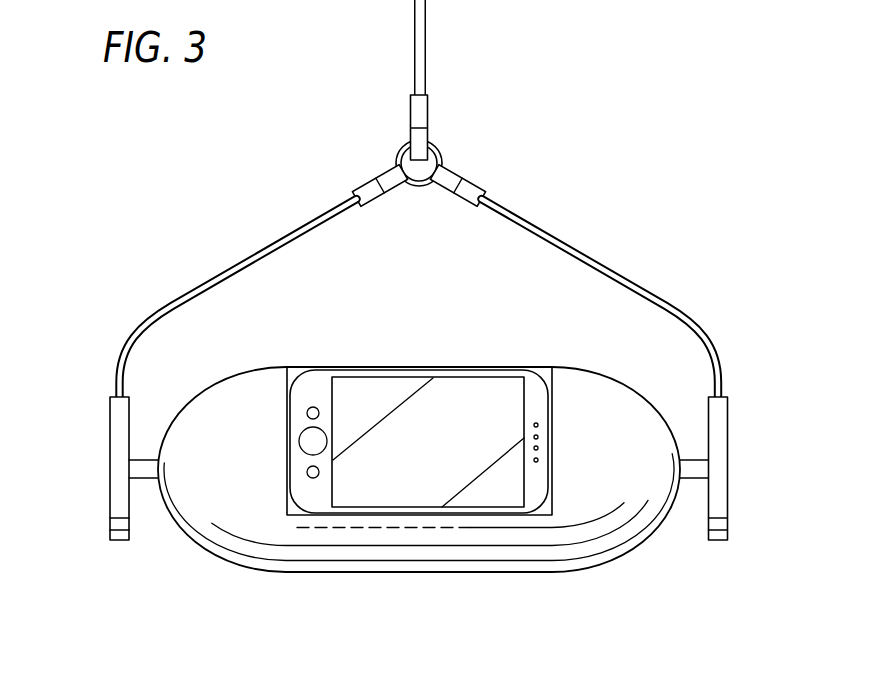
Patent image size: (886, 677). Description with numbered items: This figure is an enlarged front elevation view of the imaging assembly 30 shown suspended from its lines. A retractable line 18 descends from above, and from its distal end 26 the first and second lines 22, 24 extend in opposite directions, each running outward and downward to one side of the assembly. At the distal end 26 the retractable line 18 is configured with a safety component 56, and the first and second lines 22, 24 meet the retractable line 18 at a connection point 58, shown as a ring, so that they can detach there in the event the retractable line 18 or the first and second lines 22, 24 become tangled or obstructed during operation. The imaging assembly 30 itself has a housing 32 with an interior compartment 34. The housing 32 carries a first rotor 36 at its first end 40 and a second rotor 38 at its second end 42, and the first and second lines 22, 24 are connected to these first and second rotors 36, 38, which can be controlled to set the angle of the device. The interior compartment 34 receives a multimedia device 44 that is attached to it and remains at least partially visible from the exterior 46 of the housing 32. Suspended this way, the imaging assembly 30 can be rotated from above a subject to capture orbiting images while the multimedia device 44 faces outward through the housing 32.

The retractable line 18 is at (427, 22).
The first line 22 is at (288, 236).
The second line 24 is at (650, 292).
The distal end 26 is at (388, 102).
The imaging assembly 30 is at (396, 461).
The housing 32 is at (244, 395).
The interior compartment 34 is at (540, 366).
The first rotor 36 is at (110, 497).
The second rotor 38 is at (727, 497).
The first end 40 is at (100, 425).
The second end 42 is at (738, 427).
The multimedia device 44 is at (320, 383).
The exterior 46 is at (634, 472).
The safety component 56 is at (460, 129).
The connection point 58 is at (420, 188).